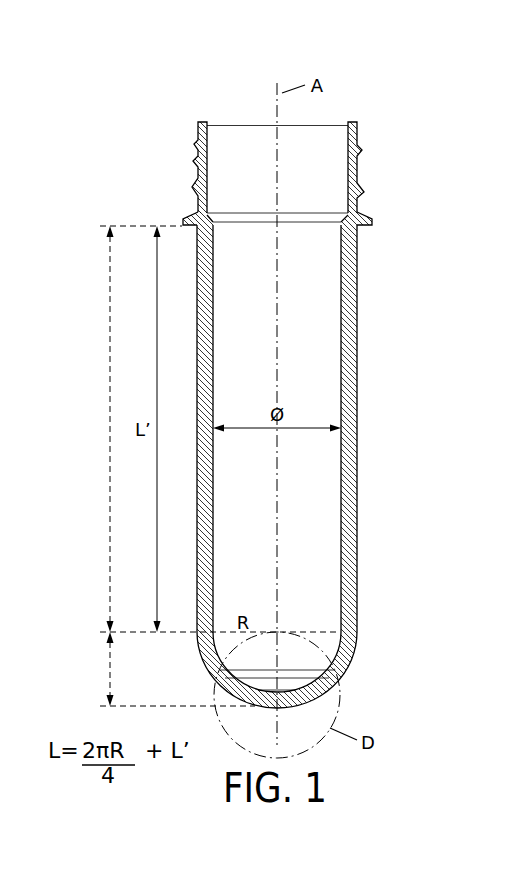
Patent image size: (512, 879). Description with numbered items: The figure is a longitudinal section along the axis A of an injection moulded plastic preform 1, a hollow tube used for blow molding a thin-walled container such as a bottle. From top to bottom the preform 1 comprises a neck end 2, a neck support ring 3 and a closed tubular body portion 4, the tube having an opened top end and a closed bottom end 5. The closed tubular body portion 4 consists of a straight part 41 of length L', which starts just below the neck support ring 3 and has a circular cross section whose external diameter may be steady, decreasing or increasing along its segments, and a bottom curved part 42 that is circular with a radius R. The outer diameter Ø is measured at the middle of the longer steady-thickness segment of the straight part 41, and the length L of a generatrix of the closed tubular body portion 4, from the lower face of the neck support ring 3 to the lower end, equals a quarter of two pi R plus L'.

The preform 1 is at (323, 415).
The neck end 2 is at (357, 163).
The neck support ring 3 is at (372, 225).
The closed tubular body portion 4 is at (358, 322).
The closed bottom end 5 is at (348, 489).
The straight part 41 is at (97, 429).
The bottom curved part 42 is at (97, 669).